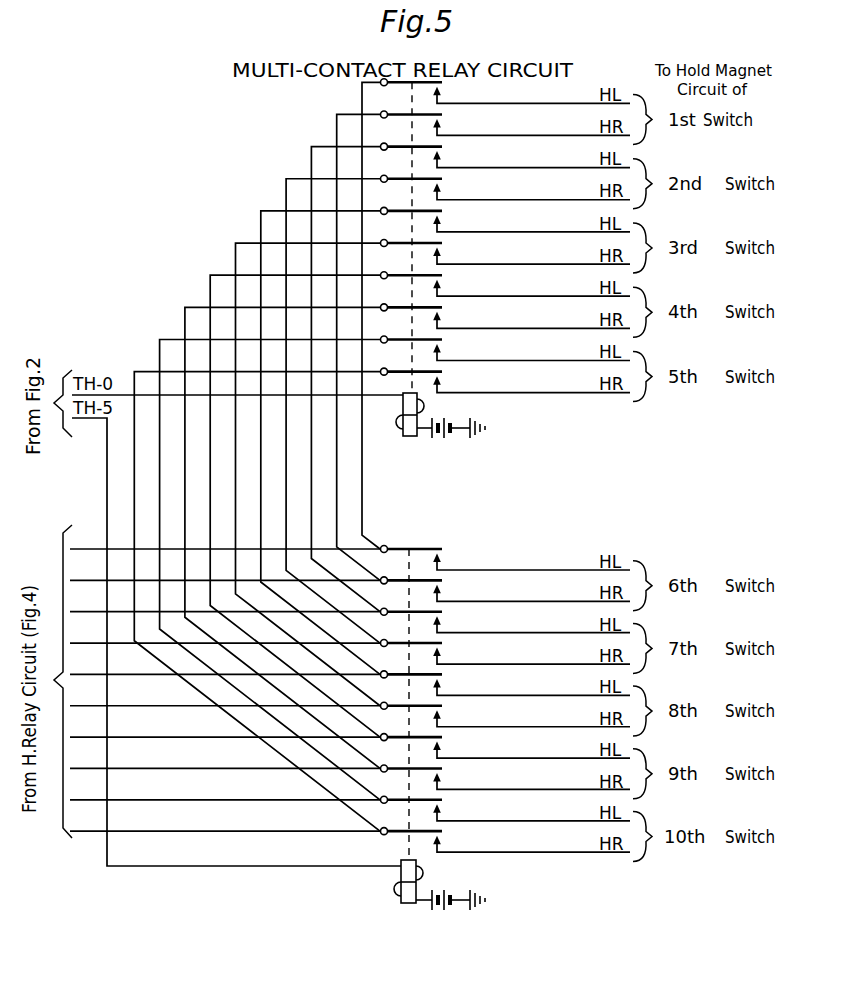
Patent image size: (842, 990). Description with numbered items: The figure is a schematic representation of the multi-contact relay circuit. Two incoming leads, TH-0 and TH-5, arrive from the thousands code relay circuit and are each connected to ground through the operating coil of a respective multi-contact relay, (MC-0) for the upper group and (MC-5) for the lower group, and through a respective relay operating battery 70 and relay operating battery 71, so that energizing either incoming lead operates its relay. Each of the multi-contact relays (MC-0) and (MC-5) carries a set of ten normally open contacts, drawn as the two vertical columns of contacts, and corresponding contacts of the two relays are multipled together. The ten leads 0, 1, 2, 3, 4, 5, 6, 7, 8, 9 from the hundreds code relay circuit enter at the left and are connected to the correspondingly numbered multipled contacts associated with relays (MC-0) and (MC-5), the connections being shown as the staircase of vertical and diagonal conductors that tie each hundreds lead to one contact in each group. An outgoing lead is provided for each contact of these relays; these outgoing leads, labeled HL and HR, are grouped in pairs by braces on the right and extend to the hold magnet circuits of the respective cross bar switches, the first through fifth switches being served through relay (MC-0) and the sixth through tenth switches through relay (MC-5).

The lead 0 is at (225, 539).
The lead 1 is at (225, 570).
The lead 2 is at (225, 601).
The lead 3 is at (225, 633).
The lead 4 is at (225, 664).
The lead 5 is at (225, 696).
The lead 6 is at (225, 727).
The lead 7 is at (225, 758).
The lead 8 is at (225, 790).
The lead 9 is at (225, 821).
The relay operating battery 70 is at (448, 435).
The relay operating battery 71 is at (441, 907).